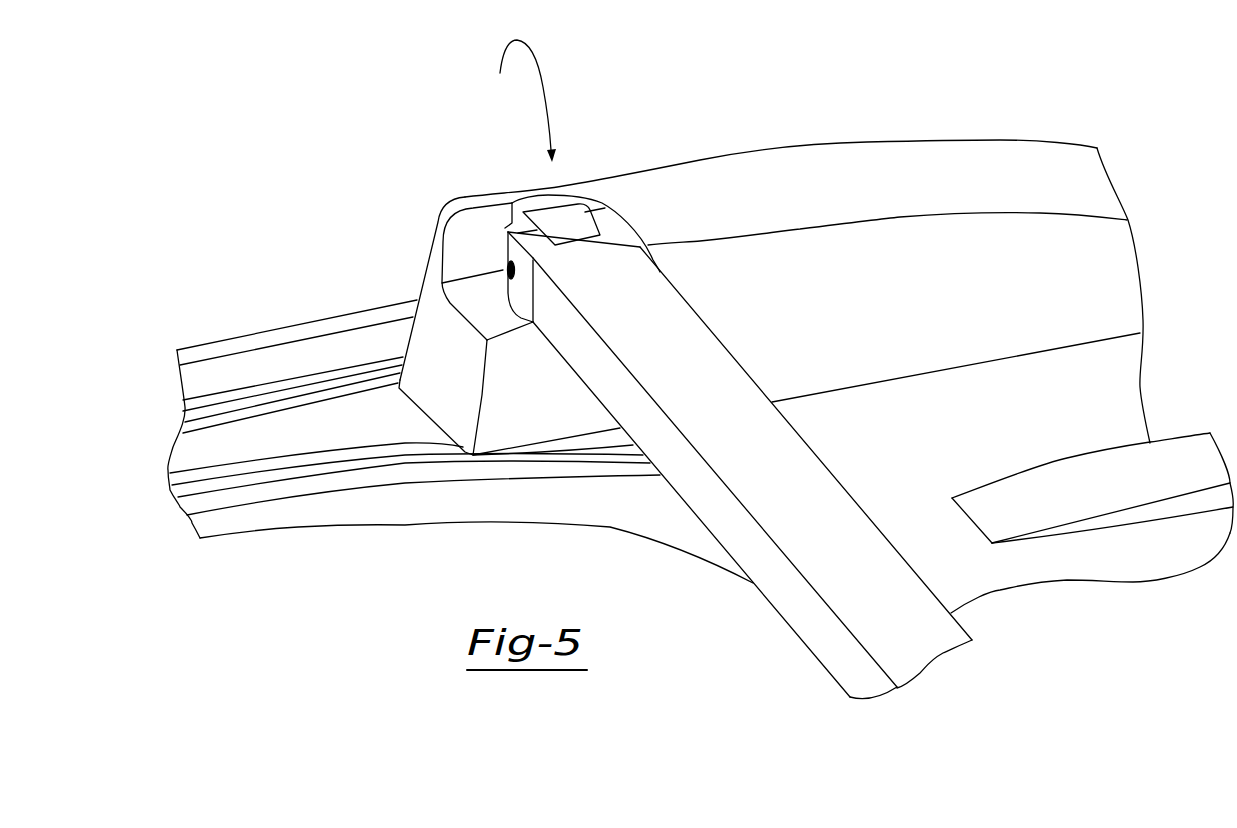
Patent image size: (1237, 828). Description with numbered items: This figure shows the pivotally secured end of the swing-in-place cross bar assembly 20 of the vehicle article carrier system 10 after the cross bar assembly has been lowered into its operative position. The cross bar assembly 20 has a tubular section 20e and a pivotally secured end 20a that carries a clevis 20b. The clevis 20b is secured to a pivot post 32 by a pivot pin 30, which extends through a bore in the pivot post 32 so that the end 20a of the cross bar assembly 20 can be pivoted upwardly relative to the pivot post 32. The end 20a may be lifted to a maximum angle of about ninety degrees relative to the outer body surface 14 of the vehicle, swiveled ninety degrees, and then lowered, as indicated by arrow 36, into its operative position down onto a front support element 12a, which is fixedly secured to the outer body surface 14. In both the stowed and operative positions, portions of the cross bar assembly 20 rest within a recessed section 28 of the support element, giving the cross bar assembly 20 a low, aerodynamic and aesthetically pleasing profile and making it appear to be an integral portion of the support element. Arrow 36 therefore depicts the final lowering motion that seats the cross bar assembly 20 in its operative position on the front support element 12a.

The vehicle article carrier system 10 is at (364, 176).
The front support element 12a is at (962, 327).
The outer body surface 14 is at (1117, 557).
The cross bar assembly 20 is at (741, 354).
The pivotally secured end 20a is at (647, 278).
The clevis 20b is at (612, 222).
The tubular section 20e is at (873, 557).
The recessed section 28 is at (498, 318).
The pivot pin 30 is at (503, 270).
The pivot post 32 is at (540, 217).
The arrow 36 is at (548, 78).